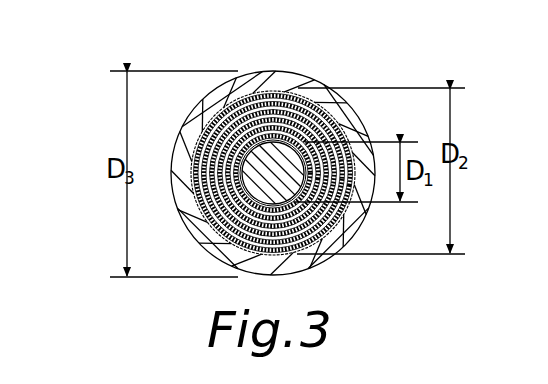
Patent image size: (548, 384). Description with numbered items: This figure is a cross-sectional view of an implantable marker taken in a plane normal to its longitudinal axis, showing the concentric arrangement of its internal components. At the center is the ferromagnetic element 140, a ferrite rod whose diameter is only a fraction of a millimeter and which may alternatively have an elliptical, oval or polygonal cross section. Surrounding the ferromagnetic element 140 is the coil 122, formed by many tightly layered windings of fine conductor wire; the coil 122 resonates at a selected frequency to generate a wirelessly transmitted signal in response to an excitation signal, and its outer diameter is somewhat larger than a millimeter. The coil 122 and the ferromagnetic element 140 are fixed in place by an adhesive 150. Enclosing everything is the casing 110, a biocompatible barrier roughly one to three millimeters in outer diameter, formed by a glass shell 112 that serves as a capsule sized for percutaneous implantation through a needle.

The casing 110 is at (270, 68).
The shell 112 is at (190, 130).
The coil 122 is at (242, 222).
The ferromagnetic element 140 is at (289, 148).
The adhesive 150 is at (326, 232).